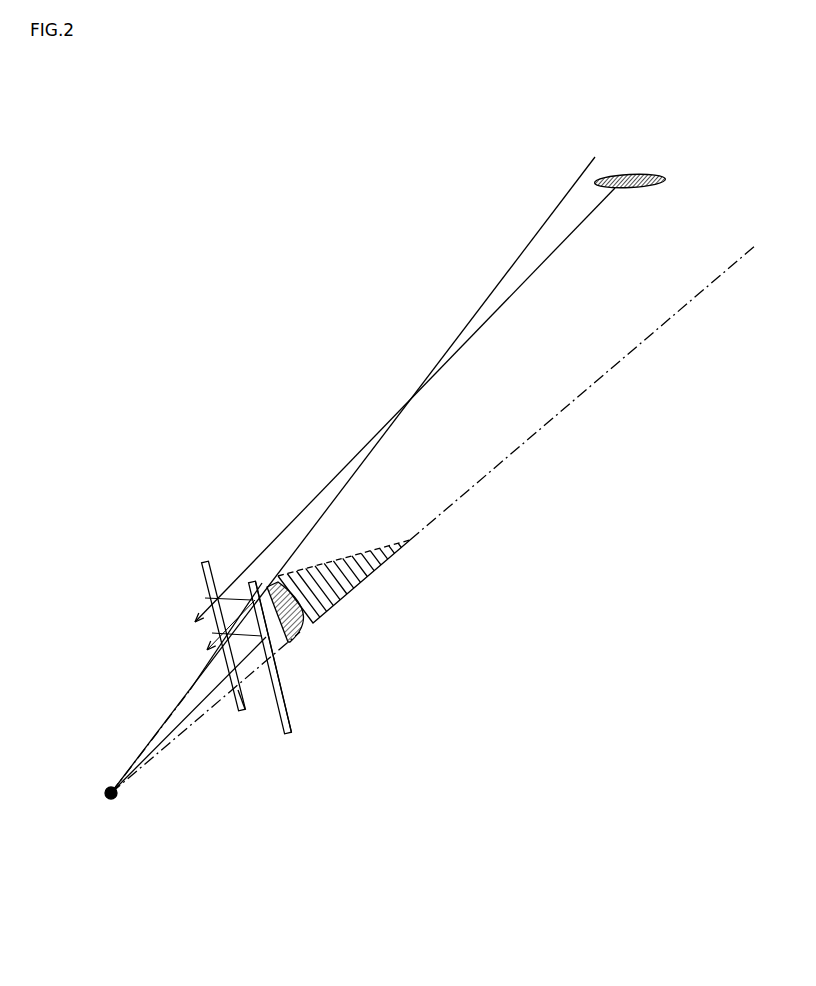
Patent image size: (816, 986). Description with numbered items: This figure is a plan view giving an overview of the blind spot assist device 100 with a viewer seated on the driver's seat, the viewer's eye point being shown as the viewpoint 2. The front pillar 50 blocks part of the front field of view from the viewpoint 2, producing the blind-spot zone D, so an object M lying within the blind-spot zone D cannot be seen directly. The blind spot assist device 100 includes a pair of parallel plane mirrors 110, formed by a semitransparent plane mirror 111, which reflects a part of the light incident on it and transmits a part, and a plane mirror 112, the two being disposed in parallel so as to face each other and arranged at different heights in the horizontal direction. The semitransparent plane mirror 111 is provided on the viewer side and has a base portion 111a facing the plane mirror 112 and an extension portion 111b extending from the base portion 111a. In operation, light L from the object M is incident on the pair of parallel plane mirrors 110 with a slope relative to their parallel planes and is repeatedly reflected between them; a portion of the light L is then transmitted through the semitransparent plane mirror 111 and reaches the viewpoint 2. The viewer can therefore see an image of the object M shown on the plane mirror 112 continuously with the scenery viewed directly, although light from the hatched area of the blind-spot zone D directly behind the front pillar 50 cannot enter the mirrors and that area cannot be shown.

The viewpoint 2 is at (117, 800).
The front pillar 50 is at (305, 638).
The blind spot assist device 100 is at (293, 752).
The pair of parallel plane mirrors 110 is at (333, 658).
The semitransparent plane mirror 111 is at (282, 692).
The base portion 111a is at (240, 697).
The extension portion 111b is at (214, 571).
The plane mirror 112 is at (282, 664).
The light L is at (327, 485).
The object M is at (650, 174).
The blind-spot zone D is at (634, 332).